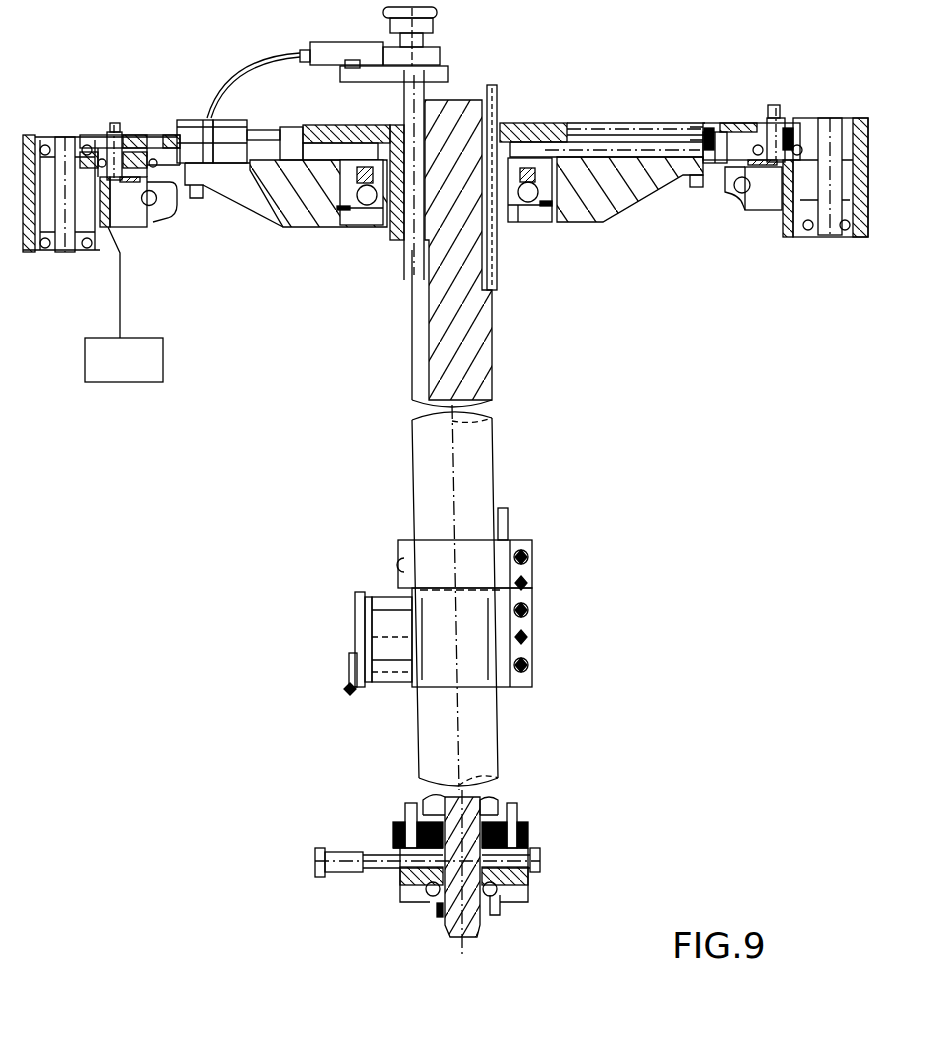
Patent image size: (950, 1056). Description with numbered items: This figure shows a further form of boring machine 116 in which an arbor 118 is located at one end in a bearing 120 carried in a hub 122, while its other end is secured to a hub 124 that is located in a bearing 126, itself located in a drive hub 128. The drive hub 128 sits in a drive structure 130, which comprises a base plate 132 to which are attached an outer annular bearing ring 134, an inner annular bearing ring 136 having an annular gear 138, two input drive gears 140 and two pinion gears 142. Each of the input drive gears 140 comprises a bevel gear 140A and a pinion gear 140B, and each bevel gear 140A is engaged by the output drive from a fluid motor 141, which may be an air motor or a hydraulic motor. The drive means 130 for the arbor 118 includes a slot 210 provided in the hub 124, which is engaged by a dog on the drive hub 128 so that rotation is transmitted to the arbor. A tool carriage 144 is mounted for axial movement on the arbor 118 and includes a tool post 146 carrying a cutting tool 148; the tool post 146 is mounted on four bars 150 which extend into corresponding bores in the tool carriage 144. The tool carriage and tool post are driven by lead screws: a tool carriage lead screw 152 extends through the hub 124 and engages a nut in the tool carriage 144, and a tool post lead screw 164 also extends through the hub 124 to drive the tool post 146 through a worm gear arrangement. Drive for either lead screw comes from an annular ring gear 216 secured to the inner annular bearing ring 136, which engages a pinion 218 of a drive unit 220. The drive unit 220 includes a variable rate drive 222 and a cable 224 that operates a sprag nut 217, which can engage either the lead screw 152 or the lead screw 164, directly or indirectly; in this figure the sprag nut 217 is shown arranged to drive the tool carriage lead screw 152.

The boring machine 116 is at (312, 340).
The arbor 118 is at (502, 363).
The bearing 120 is at (505, 897).
The hub 122 is at (400, 880).
The hub 124 is at (540, 123).
The bearing 126 is at (530, 200).
The drive hub 128 is at (625, 228).
The drive structure 130 is at (810, 102).
The base plate 132 is at (735, 123).
The outer annular bearing ring 134 is at (760, 212).
The inner annular bearing ring 136 is at (162, 205).
The annular gear 138 is at (152, 135).
The input drive gears 140 is at (830, 237).
The bevel gear 140A is at (60, 252).
The pinion gear 140B is at (40, 135).
The fluid motor 141 is at (126, 385).
The pinion gears 142 is at (772, 105).
The tool carriage 144 is at (550, 640).
The tool post 146 is at (355, 625).
The cutting tool 148 is at (335, 678).
The bars 150 is at (382, 598).
The tool carriage lead screw 152 is at (405, 252).
The tool post lead screw 164 is at (497, 285).
The slot 210 is at (268, 210).
The annular ring gear 216 is at (705, 133).
The sprag nut 217 is at (449, 72).
The pinion 218 is at (222, 160).
The drive unit 220 is at (212, 76).
The variable rate drive 222 is at (236, 111).
The cable 224 is at (262, 58).